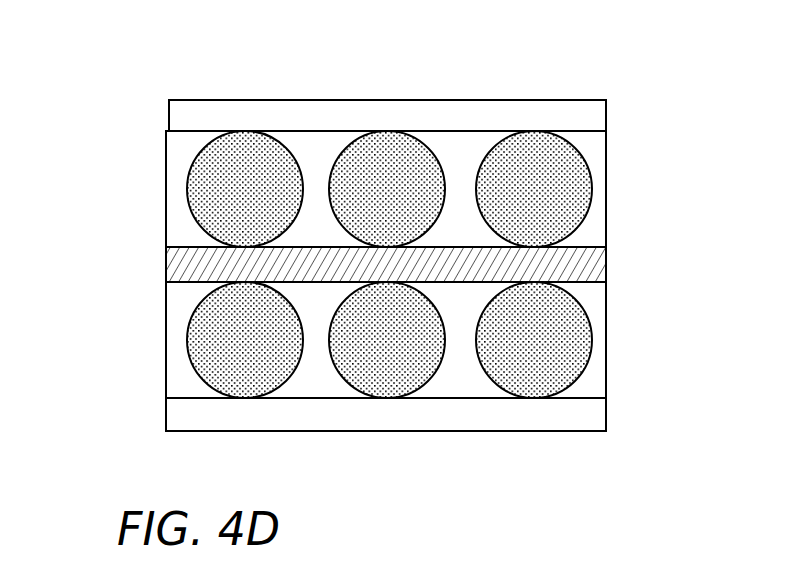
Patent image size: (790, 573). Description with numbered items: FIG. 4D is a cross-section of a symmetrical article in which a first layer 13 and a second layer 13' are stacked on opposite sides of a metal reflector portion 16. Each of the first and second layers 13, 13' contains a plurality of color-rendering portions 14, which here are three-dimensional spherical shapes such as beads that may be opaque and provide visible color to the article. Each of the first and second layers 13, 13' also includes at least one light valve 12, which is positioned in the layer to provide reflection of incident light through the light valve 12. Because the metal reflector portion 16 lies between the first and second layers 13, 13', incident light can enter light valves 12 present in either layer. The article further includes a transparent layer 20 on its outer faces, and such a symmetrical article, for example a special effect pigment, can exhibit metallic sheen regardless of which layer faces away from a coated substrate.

The light valve 12 is at (473, 132).
The first layer 13 is at (377, 182).
The second layer 13' is at (313, 340).
The color-rendering portion 14 is at (570, 167).
The metal reflector portion 16 is at (580, 270).
The transparent layer 20 is at (410, 117).